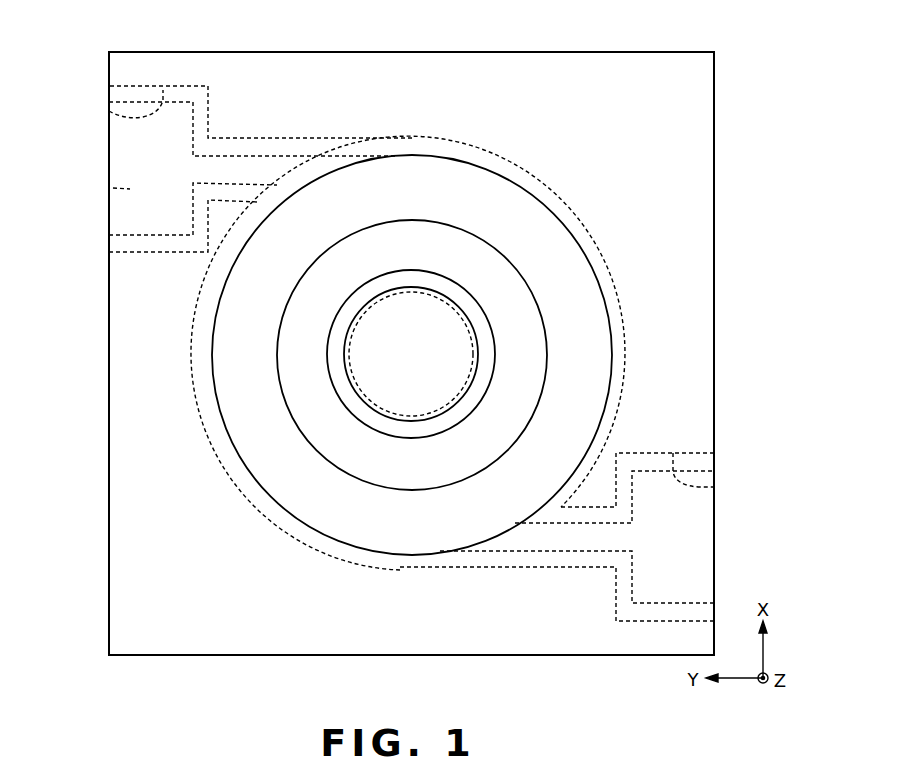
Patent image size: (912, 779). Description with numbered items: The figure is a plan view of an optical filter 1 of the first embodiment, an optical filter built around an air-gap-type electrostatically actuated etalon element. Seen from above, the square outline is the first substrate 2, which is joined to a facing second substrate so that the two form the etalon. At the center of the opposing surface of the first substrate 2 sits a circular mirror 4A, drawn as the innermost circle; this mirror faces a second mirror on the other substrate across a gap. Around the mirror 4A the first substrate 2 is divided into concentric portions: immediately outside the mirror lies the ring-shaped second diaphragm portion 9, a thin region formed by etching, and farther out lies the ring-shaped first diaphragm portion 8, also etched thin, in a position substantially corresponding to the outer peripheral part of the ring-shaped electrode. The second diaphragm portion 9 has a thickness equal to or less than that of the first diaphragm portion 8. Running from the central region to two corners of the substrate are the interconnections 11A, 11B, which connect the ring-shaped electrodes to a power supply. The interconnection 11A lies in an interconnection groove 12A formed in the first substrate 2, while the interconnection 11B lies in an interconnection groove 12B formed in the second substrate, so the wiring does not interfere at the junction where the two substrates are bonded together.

The optical filter 1 is at (80, 72).
The first substrate 2 is at (708, 240).
The circular mirror 4A is at (422, 318).
The first diaphragm portion 8 is at (600, 343).
The second diaphragm portion 9 is at (488, 366).
The interconnection 11A is at (705, 560).
The interconnection 11B is at (109, 187).
The interconnection groove 12A is at (716, 484).
The interconnection groove 12B is at (108, 108).